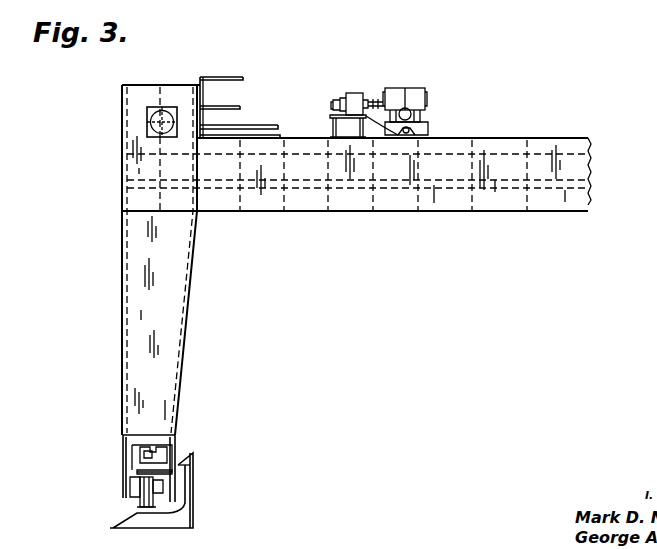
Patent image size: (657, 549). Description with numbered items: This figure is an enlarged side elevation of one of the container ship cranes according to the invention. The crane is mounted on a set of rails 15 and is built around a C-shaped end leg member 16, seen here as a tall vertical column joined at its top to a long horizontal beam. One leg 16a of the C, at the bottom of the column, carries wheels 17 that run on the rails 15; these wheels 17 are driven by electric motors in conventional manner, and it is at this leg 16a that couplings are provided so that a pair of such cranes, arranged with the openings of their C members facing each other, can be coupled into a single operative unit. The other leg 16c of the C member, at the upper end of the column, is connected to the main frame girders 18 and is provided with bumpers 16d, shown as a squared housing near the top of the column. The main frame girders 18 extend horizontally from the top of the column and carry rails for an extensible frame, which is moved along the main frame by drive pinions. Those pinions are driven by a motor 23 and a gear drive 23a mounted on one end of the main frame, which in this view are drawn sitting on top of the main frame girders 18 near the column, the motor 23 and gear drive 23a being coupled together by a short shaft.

The rails 15 is at (137, 511).
The C-shaped end leg member 16 is at (188, 308).
The leg 16a is at (167, 442).
The other leg 16c is at (122, 94).
The bumpers 16d is at (150, 120).
The wheels 17 is at (140, 497).
The main frame girders 18 is at (315, 203).
The motor 23 is at (356, 93).
The gear drive 23a is at (410, 88).